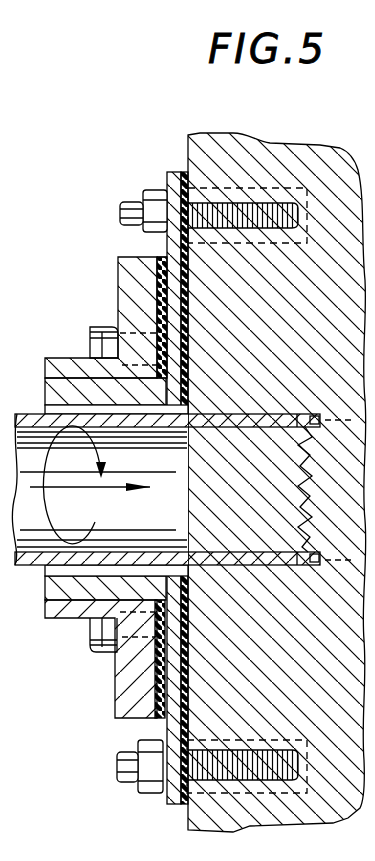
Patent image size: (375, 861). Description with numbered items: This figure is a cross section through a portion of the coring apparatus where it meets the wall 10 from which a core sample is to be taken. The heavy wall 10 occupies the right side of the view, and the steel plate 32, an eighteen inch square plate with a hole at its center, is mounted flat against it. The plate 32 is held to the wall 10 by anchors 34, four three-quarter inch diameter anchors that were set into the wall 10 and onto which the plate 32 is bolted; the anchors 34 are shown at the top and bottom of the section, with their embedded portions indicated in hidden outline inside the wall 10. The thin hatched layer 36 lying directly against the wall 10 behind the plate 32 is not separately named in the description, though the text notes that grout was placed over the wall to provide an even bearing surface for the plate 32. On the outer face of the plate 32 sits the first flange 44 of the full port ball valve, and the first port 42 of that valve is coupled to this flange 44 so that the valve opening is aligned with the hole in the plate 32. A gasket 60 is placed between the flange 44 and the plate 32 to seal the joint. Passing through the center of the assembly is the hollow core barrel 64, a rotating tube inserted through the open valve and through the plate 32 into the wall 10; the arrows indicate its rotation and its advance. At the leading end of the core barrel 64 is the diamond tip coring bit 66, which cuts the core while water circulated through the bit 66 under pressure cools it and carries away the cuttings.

The wall 10 is at (328, 165).
The steel plate 32 is at (167, 250).
The anchors 34 is at (282, 182).
The support plate 36 is at (188, 172).
The first port 42 is at (45, 385).
The first flange 44 is at (118, 310).
The gasket 60 is at (157, 287).
The hollow core barrel 64 is at (230, 566).
The diamond tip coring bit 66 is at (328, 414).